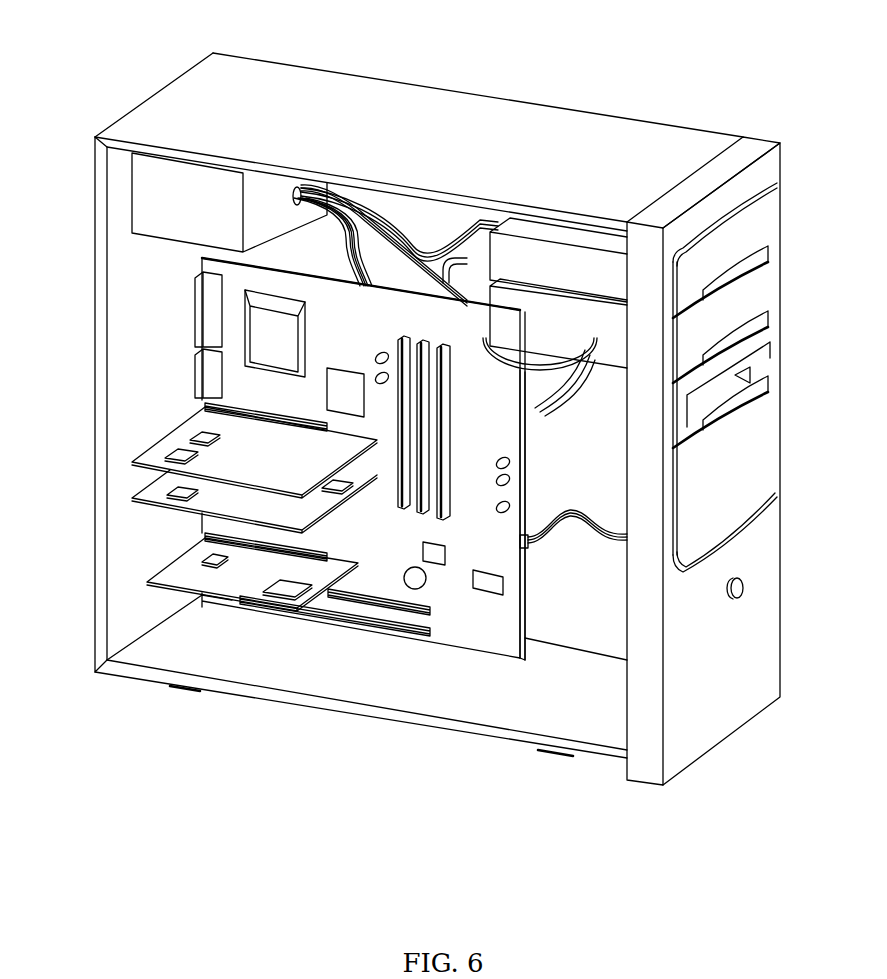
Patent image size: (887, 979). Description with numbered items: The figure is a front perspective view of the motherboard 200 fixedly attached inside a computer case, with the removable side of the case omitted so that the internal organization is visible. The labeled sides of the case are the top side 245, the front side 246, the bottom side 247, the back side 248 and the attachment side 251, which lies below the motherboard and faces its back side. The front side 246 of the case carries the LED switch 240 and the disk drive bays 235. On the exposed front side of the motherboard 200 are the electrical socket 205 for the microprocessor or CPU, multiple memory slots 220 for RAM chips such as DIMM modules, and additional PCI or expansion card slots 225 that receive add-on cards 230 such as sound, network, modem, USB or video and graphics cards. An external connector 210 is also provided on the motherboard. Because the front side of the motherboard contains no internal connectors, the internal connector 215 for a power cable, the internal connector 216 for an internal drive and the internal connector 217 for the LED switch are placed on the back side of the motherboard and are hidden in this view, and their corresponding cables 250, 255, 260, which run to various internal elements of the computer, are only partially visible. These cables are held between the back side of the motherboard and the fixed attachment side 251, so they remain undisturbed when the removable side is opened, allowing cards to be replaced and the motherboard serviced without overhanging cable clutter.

The motherboard 200 is at (332, 302).
The electrical socket for the CPU 205 is at (267, 355).
The external connector 210 is at (193, 310).
The internal connector for a power cable 215 is at (402, 288).
The internal connector for an internal drive 216 is at (522, 417).
The internal connector for the LED switch 217 is at (527, 548).
The memory slots 220 is at (452, 435).
The add-on card slots 225 is at (213, 407).
The add-on cards 230 is at (140, 457).
The disk drive bays 235 is at (763, 238).
The LED switch 240 is at (745, 588).
The top side of the case 245 is at (514, 118).
The front side of the case 246 is at (768, 642).
The bottom side of the case 247 is at (436, 732).
The back side of the case 248 is at (97, 520).
The cable 250 is at (585, 378).
The attachment side 251 is at (587, 625).
The cable 255 is at (370, 285).
The cable 260 is at (613, 537).